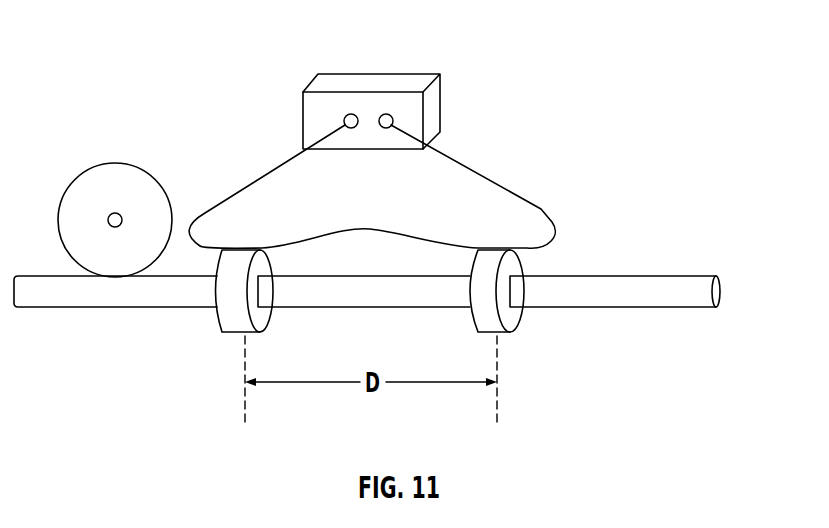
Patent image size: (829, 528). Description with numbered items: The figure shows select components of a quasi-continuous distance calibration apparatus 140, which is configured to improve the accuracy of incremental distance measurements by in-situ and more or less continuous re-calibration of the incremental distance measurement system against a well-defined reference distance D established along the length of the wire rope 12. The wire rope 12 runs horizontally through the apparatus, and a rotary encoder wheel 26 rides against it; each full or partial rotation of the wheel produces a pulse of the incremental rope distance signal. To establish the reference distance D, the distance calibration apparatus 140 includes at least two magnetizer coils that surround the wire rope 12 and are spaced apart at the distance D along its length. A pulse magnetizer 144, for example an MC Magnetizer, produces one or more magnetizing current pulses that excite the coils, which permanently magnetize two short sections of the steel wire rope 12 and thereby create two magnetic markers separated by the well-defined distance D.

The quasi-continuous distance calibration apparatus 140 is at (108, 93).
The pulse magnetizer 144 is at (442, 103).
The rotary encoder wheel 26 is at (117, 163).
The wire rope 12 is at (662, 266).